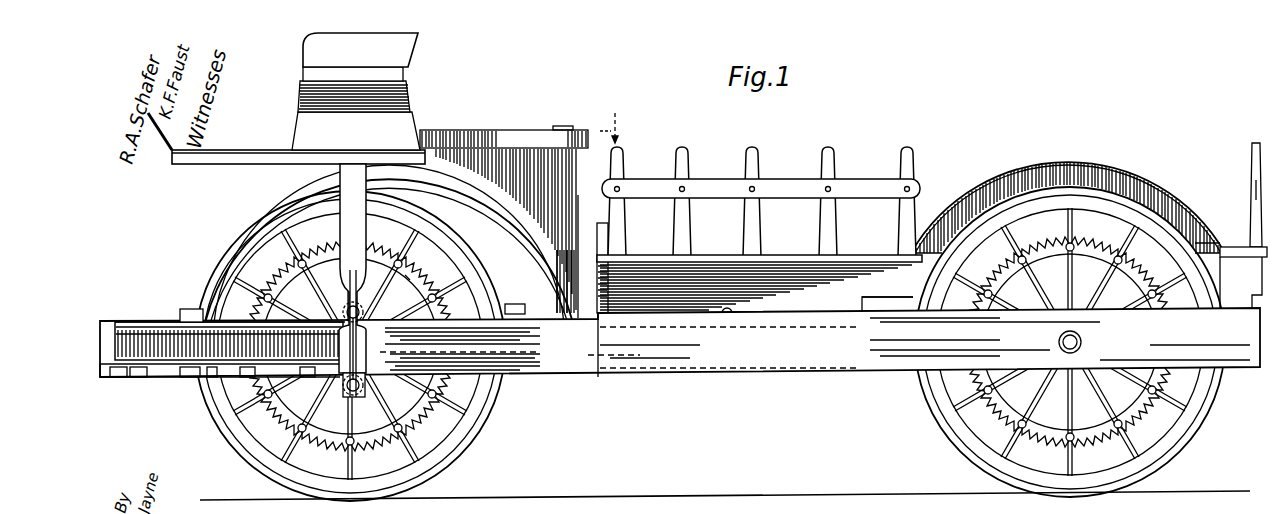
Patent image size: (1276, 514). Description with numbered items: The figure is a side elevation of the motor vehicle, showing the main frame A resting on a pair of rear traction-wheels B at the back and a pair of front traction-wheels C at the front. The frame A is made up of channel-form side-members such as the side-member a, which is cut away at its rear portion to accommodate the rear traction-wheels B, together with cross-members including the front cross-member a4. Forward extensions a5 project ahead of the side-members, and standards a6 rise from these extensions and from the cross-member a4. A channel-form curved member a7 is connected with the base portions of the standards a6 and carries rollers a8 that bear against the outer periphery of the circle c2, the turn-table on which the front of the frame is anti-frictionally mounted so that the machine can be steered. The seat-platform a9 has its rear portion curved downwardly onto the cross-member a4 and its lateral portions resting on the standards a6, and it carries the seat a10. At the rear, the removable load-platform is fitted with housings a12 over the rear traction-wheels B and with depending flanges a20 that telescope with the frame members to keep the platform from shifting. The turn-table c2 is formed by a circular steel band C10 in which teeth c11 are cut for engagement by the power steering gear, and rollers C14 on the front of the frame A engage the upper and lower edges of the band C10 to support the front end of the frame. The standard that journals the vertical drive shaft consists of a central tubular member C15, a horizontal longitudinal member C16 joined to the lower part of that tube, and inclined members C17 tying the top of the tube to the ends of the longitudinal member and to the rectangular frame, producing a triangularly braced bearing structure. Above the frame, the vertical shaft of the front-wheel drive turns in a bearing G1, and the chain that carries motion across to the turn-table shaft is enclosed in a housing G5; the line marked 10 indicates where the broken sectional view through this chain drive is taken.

The main frame A is at (805, 356).
The side-member a is at (622, 360).
The cross-member a4 is at (857, 257).
The forward extension a5 is at (460, 355).
The standard a6 is at (352, 280).
The channel-form curved member a7 is at (156, 380).
The roller a8 is at (188, 382).
The seat-platform a9 is at (243, 149).
The seat a10 is at (412, 53).
The housing a12 is at (1140, 185).
The depending flange a20 is at (834, 302).
The rear traction-wheel B is at (1200, 428).
The front traction-wheel C is at (476, 426).
The circle c2 is at (192, 318).
The circular steel band C10 is at (140, 323).
The teeth c11 is at (118, 347).
The roller C14 is at (372, 318).
The central tubular member C15 is at (343, 234).
The horizontal longitudinal member C16 is at (418, 268).
The inclined member C17 is at (290, 200).
The bearing G1 is at (596, 257).
The housing G5 is at (489, 130).
The line 10 is at (621, 128).